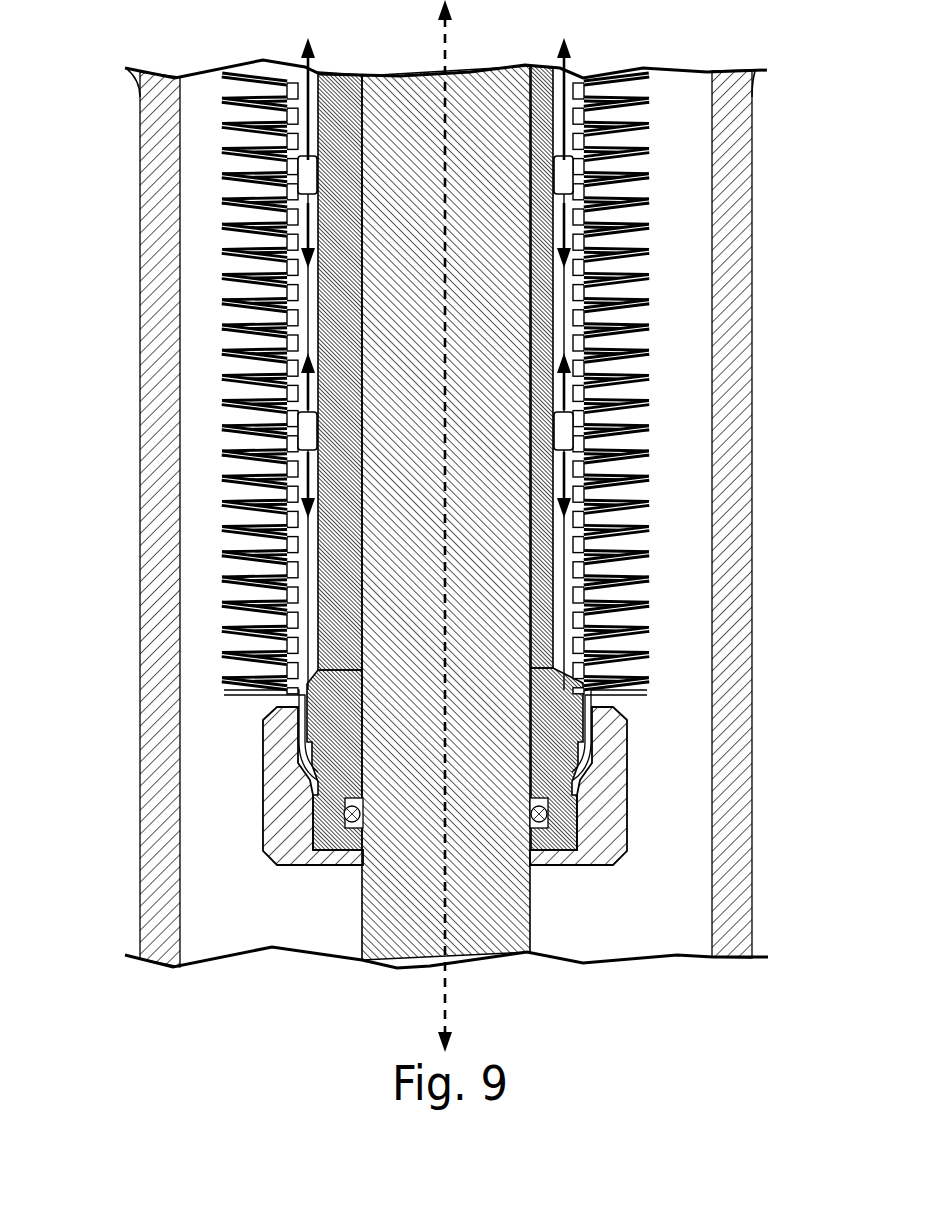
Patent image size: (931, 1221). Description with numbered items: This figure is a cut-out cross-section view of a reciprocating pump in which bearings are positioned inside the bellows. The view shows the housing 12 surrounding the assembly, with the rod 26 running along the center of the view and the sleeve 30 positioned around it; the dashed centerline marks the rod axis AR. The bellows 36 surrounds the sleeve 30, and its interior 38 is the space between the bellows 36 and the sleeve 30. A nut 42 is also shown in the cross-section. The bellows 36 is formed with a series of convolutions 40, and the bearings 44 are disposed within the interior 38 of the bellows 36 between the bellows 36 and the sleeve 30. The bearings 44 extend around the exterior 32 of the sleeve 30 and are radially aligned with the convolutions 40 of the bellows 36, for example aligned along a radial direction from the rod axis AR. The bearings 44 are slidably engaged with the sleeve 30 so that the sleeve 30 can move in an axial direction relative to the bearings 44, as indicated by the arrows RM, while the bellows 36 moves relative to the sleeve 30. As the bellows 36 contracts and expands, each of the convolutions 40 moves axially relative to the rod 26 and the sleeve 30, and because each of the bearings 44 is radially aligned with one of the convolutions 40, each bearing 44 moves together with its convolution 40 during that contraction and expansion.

The housing 12 is at (140, 290).
The rod 26 is at (362, 905).
The sleeve 30 is at (568, 723).
The exterior of sleeve 32 is at (553, 598).
The bellows 36 is at (236, 552).
The interior of bellows 38 is at (566, 543).
The convolutions 40 is at (650, 302).
The nut 42 is at (266, 770).
The bearings 44 is at (307, 188).
The arrows showing axial movement RM is at (789, 478).
The rod axis AR is at (448, 996).